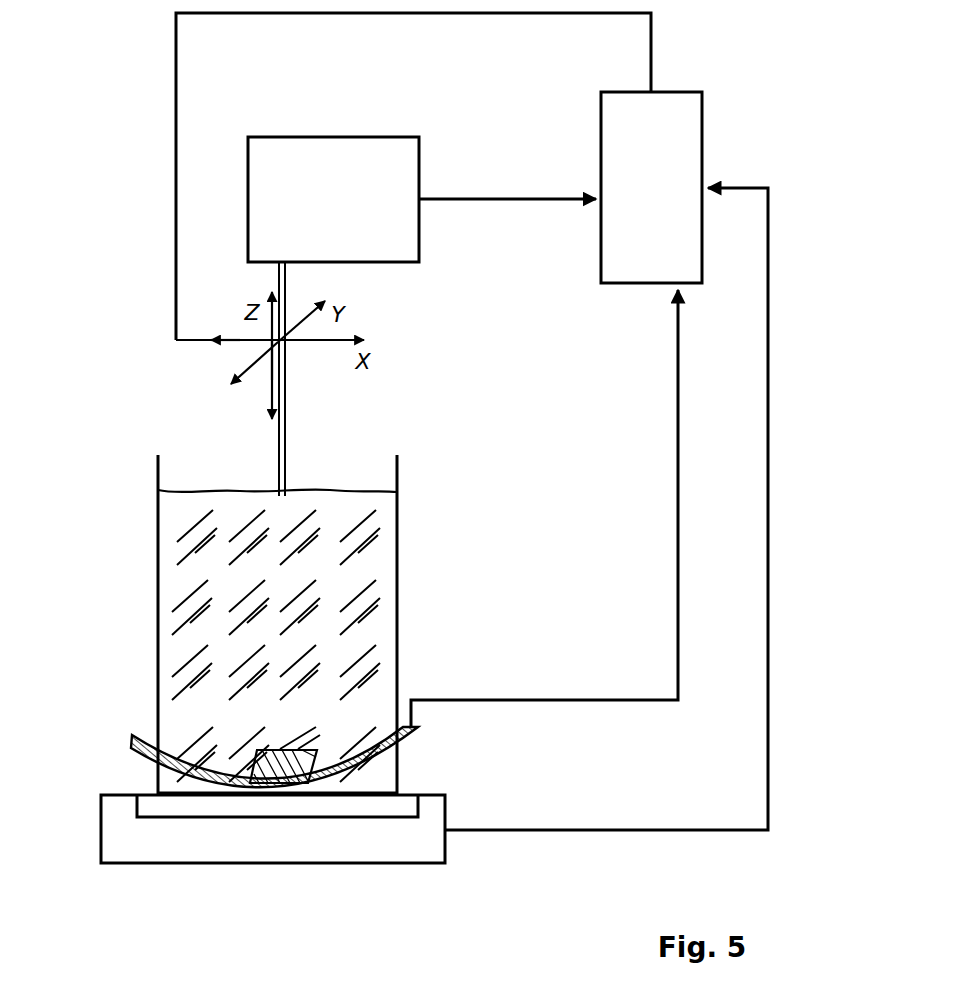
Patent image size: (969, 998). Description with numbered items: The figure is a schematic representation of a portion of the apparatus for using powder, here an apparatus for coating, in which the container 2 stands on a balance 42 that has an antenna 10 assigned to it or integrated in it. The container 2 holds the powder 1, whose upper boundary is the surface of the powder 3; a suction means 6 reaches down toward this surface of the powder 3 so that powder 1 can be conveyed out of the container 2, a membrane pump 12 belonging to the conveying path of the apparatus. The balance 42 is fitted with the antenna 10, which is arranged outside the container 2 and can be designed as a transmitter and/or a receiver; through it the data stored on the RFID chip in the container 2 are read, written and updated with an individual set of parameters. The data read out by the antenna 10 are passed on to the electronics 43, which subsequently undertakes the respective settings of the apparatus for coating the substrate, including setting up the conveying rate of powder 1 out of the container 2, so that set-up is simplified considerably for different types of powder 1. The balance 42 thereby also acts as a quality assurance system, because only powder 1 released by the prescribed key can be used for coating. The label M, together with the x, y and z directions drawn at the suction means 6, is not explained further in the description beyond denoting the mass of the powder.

The powder 1 is at (347, 572).
The container 2 is at (157, 578).
The surface of the powder 3 is at (209, 480).
The suction means 6 is at (286, 382).
The antenna 10 is at (138, 733).
The membrane pump 12 is at (348, 223).
The balance 42 is at (228, 843).
The electronics 43 is at (645, 187).
The medium M is at (343, 656).